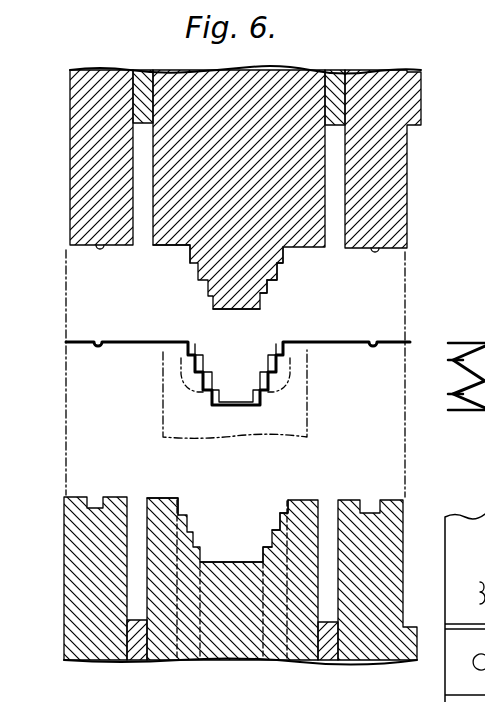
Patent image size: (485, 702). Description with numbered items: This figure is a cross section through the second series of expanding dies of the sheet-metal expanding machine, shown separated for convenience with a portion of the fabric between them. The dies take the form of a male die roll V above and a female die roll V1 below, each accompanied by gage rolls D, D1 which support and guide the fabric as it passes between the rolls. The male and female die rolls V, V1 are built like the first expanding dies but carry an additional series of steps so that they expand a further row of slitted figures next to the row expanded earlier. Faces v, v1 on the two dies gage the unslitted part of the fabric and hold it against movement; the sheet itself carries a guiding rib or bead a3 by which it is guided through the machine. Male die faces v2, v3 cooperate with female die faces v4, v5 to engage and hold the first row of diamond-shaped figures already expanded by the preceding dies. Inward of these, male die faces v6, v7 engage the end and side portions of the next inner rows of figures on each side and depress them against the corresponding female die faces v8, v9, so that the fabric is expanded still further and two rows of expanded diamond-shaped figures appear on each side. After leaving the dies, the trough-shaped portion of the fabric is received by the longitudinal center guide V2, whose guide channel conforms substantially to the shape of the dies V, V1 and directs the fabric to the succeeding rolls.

The gage roll D is at (80, 192).
The gage roll D1 is at (64, 563).
The male die roll V is at (300, 85).
The female die roll V1 is at (300, 660).
The longitudinal guide V2 is at (163, 366).
The die face v is at (166, 250).
The die face v1 is at (160, 497).
The male die face v2 is at (282, 256).
The male die face v3 is at (272, 282).
The female die face v4 is at (290, 500).
The female die face v5 is at (278, 522).
The male die face v6 is at (264, 300).
The male die face v7 is at (242, 311).
The female die face v8 is at (266, 548).
The female die face v9 is at (236, 561).
The guiding rib or bead a3 is at (100, 334).